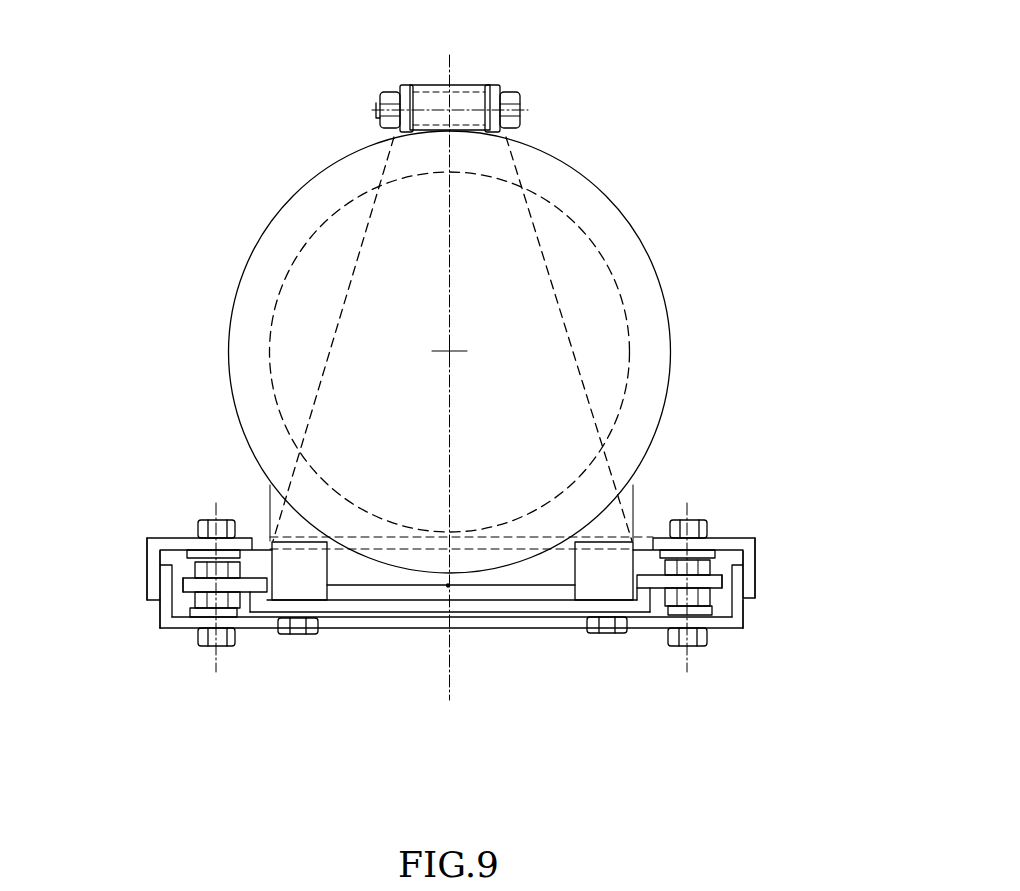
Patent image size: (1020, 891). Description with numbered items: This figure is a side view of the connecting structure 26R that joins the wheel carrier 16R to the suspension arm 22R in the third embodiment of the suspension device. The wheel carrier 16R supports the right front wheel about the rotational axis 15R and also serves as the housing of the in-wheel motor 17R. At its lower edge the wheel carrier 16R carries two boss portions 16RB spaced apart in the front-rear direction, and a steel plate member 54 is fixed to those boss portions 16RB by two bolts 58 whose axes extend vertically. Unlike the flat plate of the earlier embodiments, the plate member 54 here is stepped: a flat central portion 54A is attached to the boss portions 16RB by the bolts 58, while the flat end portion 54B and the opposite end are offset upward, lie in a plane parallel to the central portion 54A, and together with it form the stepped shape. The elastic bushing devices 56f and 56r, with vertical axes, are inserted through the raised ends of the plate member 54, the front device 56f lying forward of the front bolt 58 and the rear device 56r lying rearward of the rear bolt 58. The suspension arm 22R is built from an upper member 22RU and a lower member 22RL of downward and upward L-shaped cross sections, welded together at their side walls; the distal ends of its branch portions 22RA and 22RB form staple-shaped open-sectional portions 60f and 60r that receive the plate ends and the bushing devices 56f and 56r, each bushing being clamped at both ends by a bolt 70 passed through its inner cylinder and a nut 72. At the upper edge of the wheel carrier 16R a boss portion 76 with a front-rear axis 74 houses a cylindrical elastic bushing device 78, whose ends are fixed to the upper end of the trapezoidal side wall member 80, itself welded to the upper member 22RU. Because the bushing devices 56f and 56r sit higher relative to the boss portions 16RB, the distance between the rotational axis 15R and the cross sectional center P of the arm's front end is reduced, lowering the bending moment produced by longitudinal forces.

The rotational axis 15R is at (450, 351).
The wheel carrier 16R is at (592, 192).
The boss portions 16RB is at (322, 552).
The in-wheel motor 17R is at (628, 307).
The suspension arm 22R is at (773, 517).
The branch portion 22RA is at (178, 637).
The branch portion 22RB is at (713, 637).
The lower member 22RL is at (160, 610).
The upper member 22RU is at (150, 575).
The connecting structure 26R is at (140, 530).
The plate member 54 is at (505, 628).
The central portion 54A is at (368, 620).
The end portion 54B is at (185, 597).
The elastic bushing device 56f is at (241, 603).
The elastic bushing device 56r is at (656, 603).
The bolts 58 is at (297, 632).
The open-sectional portion 60f is at (162, 538).
The open-sectional portion 60r is at (723, 538).
The bolt 70 is at (223, 516).
The nut 72 is at (203, 648).
The axis 74 is at (540, 108).
The boss portion 76 is at (472, 82).
The elastic bushing device 78 is at (430, 83).
The side wall member 80 is at (357, 262).
The cross sectional center P is at (448, 586).